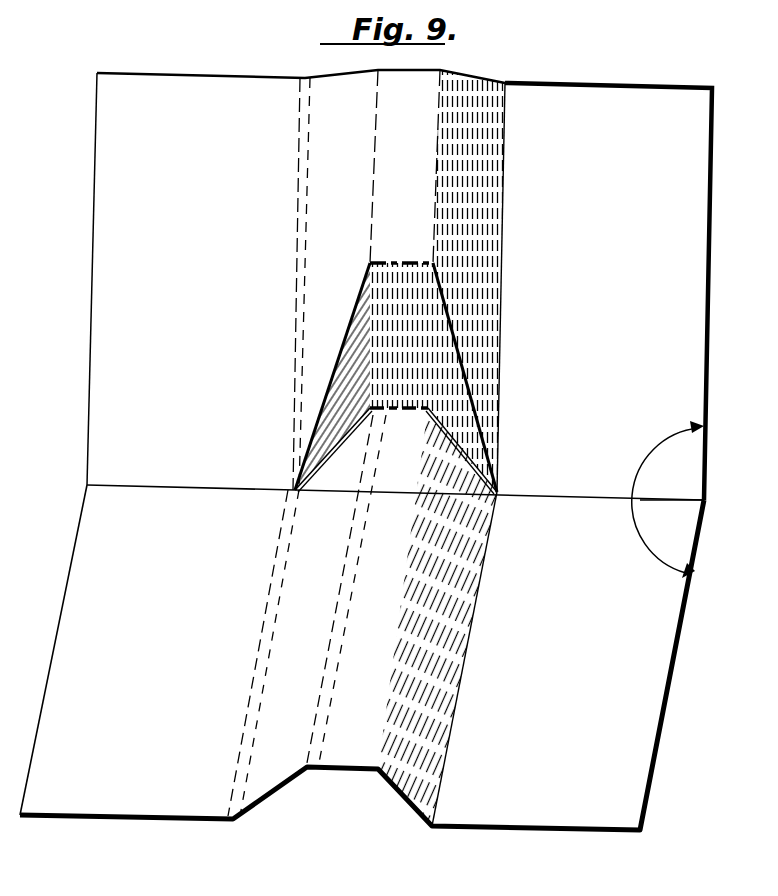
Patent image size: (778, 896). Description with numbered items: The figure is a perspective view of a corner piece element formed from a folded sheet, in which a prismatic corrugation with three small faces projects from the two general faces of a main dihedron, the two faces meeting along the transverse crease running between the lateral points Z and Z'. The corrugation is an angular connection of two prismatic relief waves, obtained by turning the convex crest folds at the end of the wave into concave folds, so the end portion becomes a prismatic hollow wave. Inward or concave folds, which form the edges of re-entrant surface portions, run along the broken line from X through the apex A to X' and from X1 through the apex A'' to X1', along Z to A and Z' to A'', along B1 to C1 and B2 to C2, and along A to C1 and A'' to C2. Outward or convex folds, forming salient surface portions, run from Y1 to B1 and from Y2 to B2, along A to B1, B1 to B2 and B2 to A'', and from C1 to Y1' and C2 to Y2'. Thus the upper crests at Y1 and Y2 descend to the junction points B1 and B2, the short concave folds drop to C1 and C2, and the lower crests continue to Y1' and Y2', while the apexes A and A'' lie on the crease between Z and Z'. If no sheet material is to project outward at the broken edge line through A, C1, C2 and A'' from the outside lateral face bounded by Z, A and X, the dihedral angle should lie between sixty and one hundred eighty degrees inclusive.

The top-edge fold point X is at (303, 270).
The top-edge crest point Y1 is at (378, 154).
The top-edge crest point Y2 is at (440, 154).
The top-edge fold point X1 is at (516, 271).
The upper junction point B1 is at (364, 369).
The upper junction point B2 is at (465, 371).
The lower junction point C1 is at (361, 572).
The lower junction point C2 is at (461, 441).
The fold apex A is at (263, 641).
The fold apex A'' is at (481, 646).
The lateral edge point Z is at (395, 480).
The lateral edge point Z' is at (672, 485).
The bottom-edge fold point X' is at (263, 810).
The bottom-edge crest point Y1' is at (338, 781).
The bottom-edge crest point Y2' is at (395, 794).
The bottom-edge fold point X1' is at (461, 841).